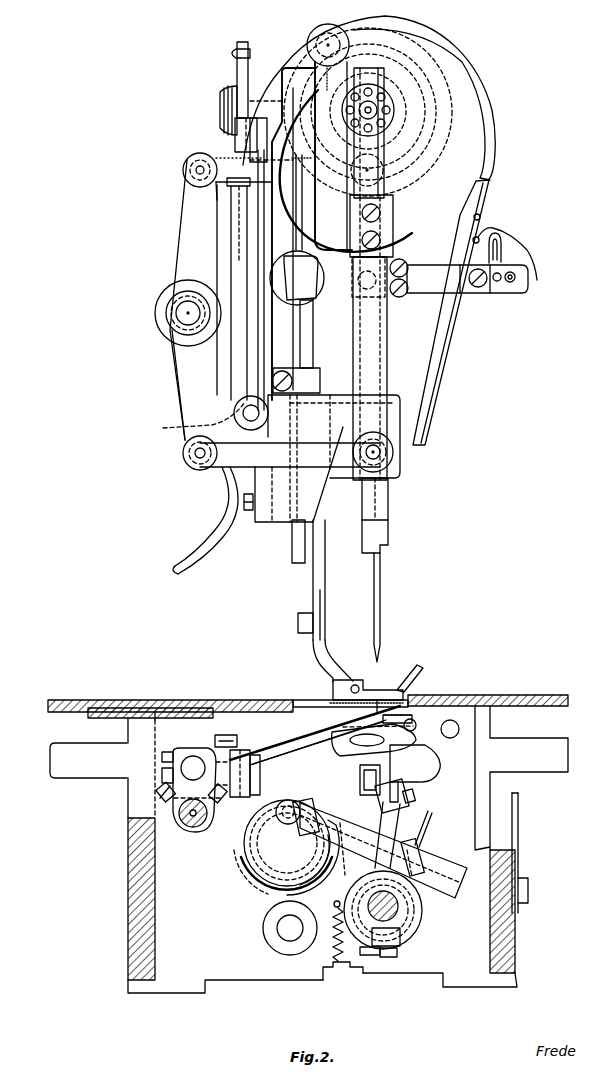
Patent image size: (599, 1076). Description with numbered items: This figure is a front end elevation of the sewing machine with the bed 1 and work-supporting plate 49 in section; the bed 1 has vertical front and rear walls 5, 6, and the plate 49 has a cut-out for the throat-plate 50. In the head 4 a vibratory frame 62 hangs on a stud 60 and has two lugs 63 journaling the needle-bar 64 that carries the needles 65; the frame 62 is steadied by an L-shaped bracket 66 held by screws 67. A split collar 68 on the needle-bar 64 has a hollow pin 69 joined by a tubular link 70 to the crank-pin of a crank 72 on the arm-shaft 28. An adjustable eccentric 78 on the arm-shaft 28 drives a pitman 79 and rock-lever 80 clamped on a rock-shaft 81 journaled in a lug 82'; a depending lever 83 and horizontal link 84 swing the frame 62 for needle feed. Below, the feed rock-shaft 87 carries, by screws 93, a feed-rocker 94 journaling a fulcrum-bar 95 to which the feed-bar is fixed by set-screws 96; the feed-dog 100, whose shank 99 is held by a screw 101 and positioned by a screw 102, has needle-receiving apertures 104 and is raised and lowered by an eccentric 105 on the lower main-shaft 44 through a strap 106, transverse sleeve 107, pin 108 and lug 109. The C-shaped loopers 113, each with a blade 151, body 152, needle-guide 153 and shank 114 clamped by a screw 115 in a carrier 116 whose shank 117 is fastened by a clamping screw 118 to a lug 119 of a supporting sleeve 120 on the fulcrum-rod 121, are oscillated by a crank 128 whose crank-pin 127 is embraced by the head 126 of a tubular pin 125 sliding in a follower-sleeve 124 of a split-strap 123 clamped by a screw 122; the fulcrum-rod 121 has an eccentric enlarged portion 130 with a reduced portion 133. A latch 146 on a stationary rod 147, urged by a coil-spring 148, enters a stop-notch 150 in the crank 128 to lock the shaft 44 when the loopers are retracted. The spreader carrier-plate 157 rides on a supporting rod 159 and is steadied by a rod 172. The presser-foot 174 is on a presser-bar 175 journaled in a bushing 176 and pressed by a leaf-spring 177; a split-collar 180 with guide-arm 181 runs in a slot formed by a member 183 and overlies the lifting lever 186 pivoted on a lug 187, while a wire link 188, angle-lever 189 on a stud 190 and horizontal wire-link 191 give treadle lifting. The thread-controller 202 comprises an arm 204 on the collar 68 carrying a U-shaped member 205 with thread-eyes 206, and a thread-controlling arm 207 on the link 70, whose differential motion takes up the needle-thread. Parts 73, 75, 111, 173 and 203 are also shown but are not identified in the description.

The bed 1 is at (106, 763).
The head 4 is at (486, 96).
The front wall 5 is at (516, 940).
The rear wall 6 is at (130, 865).
The arm-shaft 28 is at (383, 175).
The lower main-shaft 44 is at (262, 893).
The work-supporting plate 49 is at (112, 700).
The throat-plate 50 is at (288, 700).
The stud 60 is at (314, 42).
The vibratory frame 62 is at (372, 360).
The lugs 63 is at (396, 456).
The needle-bar 64 is at (391, 499).
The needles 65 is at (381, 598).
The L-shaped bracket 66 is at (413, 408).
The screws 67 is at (245, 515).
The split collar 68 is at (376, 322).
The hollow pin 69 is at (386, 308).
The tubular link 70 is at (341, 152).
The crank 72 is at (408, 142).
The connecting link 73 is at (383, 82).
The ball bearing 75 is at (393, 104).
The adjustable eccentric 78 is at (428, 148).
The pitman 79 is at (244, 182).
The rock-lever 80 is at (188, 212).
The rock-shaft 81 is at (180, 312).
The lug 82' is at (169, 308).
The depending lever 83 is at (188, 388).
The horizontal link 84 is at (283, 460).
The feed-advance and -return rock-shaft 87 is at (195, 832).
The screws 93 is at (157, 803).
The feed-rocker 94 is at (162, 780).
The fulcrum-bar 95 is at (207, 767).
The set-screws 96 is at (188, 750).
The shank 99 is at (257, 748).
The feed-dog 100 is at (350, 680).
The screw 101 is at (260, 776).
The screw 102 is at (227, 735).
The needle-receiving apertures 104 is at (378, 700).
The eccentric 105 is at (276, 813).
The strap 106 is at (262, 862).
The transverse sleeve 107 is at (297, 717).
The pin 108 is at (360, 776).
The lug 109 is at (172, 750).
The cover plate 111 is at (150, 708).
The loopers 113 is at (335, 749).
The cylindrical shank 114 is at (408, 788).
The screw 115 is at (414, 795).
The carrier 116 is at (400, 806).
The shank 117 is at (397, 818).
The clamping screw 118 is at (420, 846).
The upstanding lug 119 is at (428, 832).
The supporting sleeve 120 is at (418, 921).
The fulcrum-rod 121 is at (415, 906).
The screw 122 is at (392, 958).
The split-strap 123 is at (372, 957).
The follower-sleeve 124 is at (520, 853).
The tubular pin 125 is at (333, 815).
The head 126 is at (262, 840).
The crank-pin 127 is at (274, 822).
The crank 128 is at (270, 875).
The enlarged eccentrically disposed portion 130 is at (412, 931).
The reduced portion 133 is at (392, 930).
The latch 146 is at (327, 925).
The stationary rod 147 is at (277, 929).
The coil-spring 148 is at (328, 963).
The stop-notch 150 is at (292, 872).
The blade 151 is at (405, 733).
The body 152 is at (405, 752).
The needle-guide 153 is at (430, 766).
The carrier-plate 157 is at (408, 713).
The supporting rod 159 is at (367, 740).
The rod 172 is at (460, 729).
The thread guide 173 is at (413, 667).
The presser-foot 174 is at (311, 644).
The presser-bar 175 is at (312, 585).
The bushing 176 is at (292, 556).
The leaf-spring 177 is at (292, 264).
The split-collar 180 is at (310, 375).
The guide-arm 181 is at (234, 401).
The member 183 is at (231, 253).
The presser-foot lifting lever 186 is at (220, 502).
The lug 187 is at (192, 419).
The wire link 188 is at (265, 327).
The angle-lever 189 is at (243, 70).
The stud 190 is at (220, 106).
The horizontal wire-link 191 is at (235, 54).
The thread-controller 202 is at (516, 254).
The needle clamp 203 is at (390, 547).
The arm 204 is at (432, 286).
The U-shaped member 205 is at (519, 281).
The thread-eyes 206 is at (512, 284).
The thread-controlling arm 207 is at (485, 238).